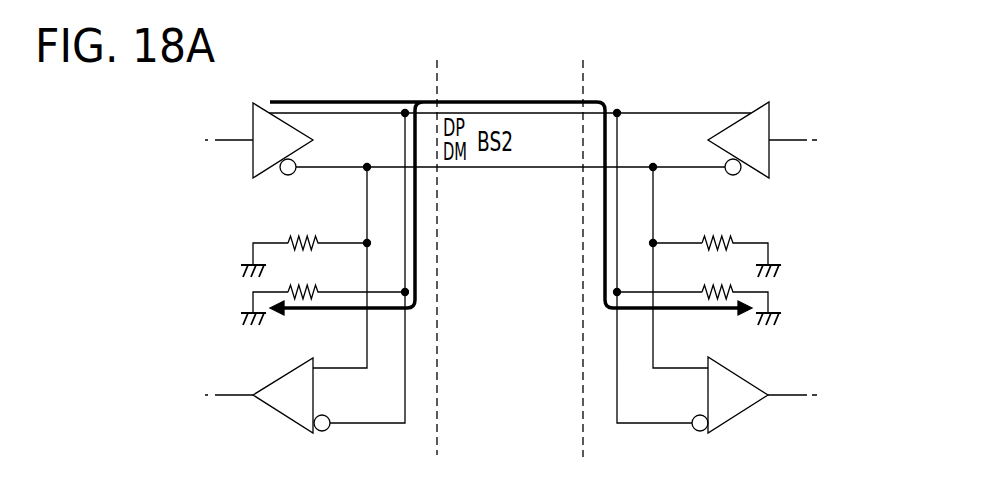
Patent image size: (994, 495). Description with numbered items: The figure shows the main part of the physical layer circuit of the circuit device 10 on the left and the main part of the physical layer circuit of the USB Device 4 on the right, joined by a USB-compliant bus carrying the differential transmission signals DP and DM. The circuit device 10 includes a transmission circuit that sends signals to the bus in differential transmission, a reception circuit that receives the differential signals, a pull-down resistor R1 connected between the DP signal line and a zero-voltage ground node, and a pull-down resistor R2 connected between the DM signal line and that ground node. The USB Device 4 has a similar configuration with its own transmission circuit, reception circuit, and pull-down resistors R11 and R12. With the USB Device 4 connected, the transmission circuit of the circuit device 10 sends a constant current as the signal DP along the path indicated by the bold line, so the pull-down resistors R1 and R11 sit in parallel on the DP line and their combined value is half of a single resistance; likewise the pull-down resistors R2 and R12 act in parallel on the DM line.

The circuit device 10 is at (381, 72).
The USB Device 4 is at (583, 67).
The pull-down resistor R1 is at (323, 293).
The pull-down resistor R2 is at (304, 246).
The pull-down resistor R11 is at (699, 293).
The pull-down resistor R12 is at (717, 245).